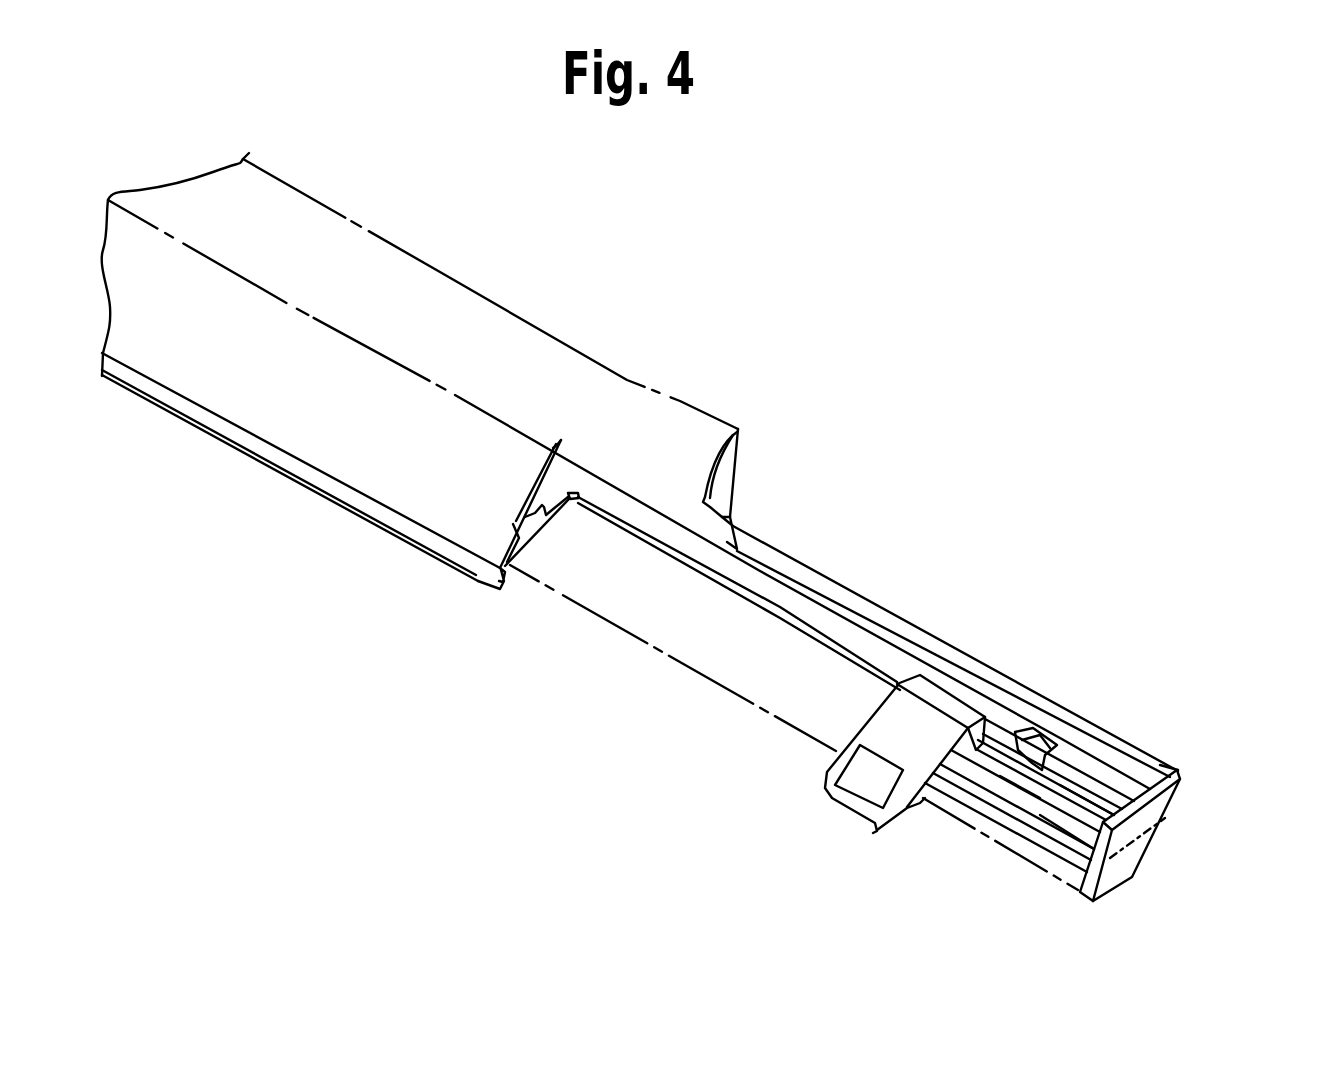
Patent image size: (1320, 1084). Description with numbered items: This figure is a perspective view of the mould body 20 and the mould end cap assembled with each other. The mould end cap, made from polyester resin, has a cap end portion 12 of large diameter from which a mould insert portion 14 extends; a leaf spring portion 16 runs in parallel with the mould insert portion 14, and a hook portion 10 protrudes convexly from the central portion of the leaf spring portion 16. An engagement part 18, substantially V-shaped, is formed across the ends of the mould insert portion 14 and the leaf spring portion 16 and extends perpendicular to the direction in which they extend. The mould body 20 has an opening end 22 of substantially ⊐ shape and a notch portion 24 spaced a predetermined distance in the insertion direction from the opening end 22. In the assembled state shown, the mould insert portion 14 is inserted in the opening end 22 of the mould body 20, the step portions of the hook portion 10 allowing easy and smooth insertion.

The hook portion 10 is at (1015, 778).
The cap end portion 12 is at (1153, 833).
The mould insert portion 14 is at (1070, 818).
The leaf spring portion 16 is at (1077, 790).
The engagement part 18 is at (880, 733).
The mould body 20 is at (722, 395).
The opening end 22 is at (1178, 788).
The notch portion 24 is at (1015, 730).